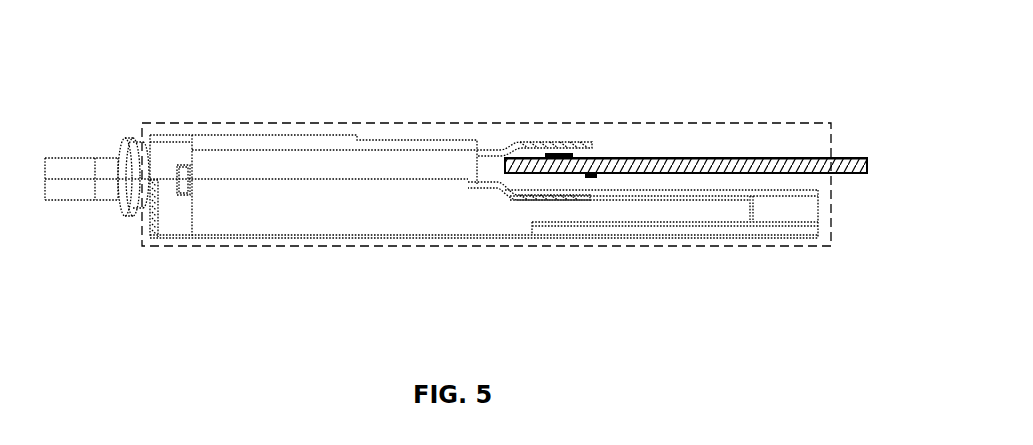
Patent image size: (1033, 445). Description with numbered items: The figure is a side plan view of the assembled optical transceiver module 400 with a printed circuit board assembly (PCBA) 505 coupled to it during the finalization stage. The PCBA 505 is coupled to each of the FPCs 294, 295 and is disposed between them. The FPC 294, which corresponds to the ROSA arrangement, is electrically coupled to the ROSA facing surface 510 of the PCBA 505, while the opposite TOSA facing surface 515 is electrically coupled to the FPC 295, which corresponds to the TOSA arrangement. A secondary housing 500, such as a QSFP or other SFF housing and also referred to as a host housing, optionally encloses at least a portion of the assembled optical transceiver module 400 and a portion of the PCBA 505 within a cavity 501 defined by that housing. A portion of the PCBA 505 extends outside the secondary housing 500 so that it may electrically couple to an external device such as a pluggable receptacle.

The assembled optical transceiver module 400 is at (144, 118).
The secondary housing 500 is at (310, 122).
The FPC 294 is at (544, 152).
The FPC 295 is at (548, 190).
The cavity 501 is at (708, 147).
The printed circuit board assembly 505 is at (621, 157).
The ROSA facing surface 510 is at (728, 150).
The TOSA facing surface 515 is at (739, 190).